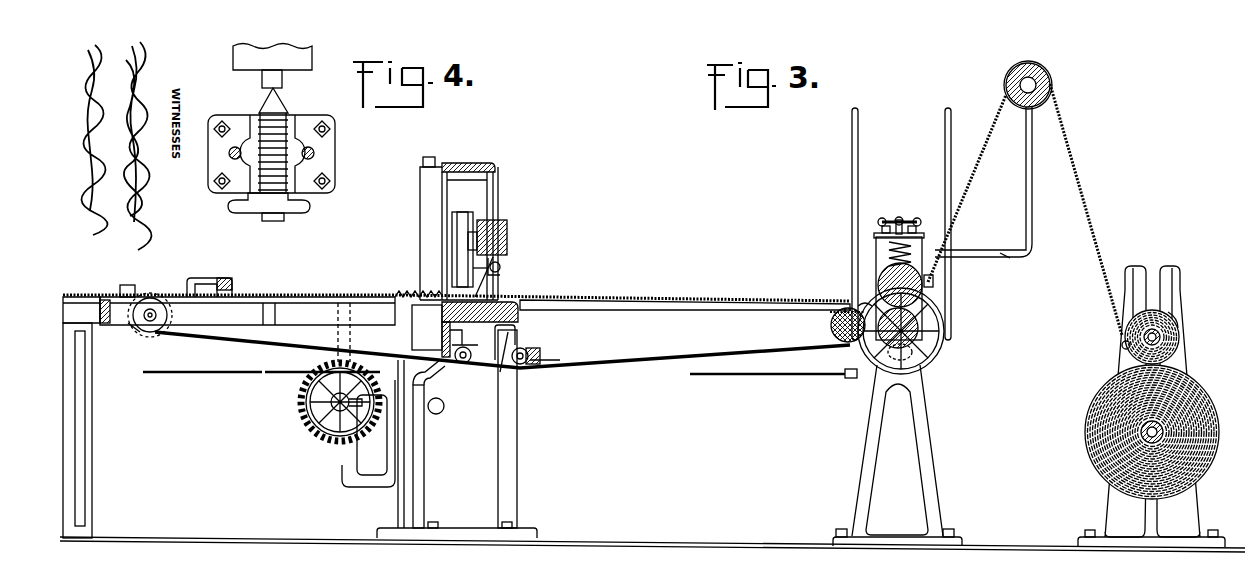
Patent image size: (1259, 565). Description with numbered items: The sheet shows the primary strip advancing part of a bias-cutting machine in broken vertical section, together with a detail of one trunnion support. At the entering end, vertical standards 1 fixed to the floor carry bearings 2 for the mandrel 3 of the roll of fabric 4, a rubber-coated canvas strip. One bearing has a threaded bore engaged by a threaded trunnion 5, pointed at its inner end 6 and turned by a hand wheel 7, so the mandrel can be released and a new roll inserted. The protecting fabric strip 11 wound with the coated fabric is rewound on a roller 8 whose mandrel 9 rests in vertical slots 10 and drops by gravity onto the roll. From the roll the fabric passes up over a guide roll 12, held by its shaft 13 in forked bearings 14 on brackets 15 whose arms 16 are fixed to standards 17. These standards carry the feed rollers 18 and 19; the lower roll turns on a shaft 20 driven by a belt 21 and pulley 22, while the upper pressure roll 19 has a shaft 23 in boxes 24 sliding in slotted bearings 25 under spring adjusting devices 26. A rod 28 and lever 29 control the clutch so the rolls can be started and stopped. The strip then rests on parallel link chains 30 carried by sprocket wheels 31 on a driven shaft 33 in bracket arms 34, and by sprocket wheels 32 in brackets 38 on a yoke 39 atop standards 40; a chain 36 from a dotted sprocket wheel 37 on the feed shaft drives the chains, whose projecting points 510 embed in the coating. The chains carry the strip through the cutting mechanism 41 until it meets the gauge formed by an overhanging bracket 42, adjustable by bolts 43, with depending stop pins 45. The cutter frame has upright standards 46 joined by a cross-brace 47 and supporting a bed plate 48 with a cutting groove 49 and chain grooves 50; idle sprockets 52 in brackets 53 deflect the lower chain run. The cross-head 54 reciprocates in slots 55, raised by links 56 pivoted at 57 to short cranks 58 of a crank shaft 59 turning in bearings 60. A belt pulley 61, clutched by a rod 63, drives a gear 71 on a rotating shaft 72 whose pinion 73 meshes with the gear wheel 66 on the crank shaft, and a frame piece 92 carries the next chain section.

In FIG. 3, the vertical standards 1 is at (1105, 500).
In FIG. 4, the bearings 2 is at (300, 115).
In FIG. 4, the mandrel 3 is at (262, 74).
In FIG. 3, the mandrel 3 is at (1085, 432).
In FIG. 3, the roll of fabric 4 is at (1212, 385).
In FIG. 4, the threaded trunnion 5 is at (258, 175).
In FIG. 4, the pointed inner end 6 is at (283, 100).
In FIG. 4, the hand wheel 7 is at (290, 208).
In FIG. 3, the roller 8 is at (1178, 335).
In FIG. 3, the mandrel 9 is at (1124, 346).
In FIG. 3, the vertical slots 10 is at (1150, 262).
In FIG. 3, the protecting fabric strip 11 is at (1172, 318).
In FIG. 3, the guide roll 12 is at (997, 110).
In FIG. 3, the shaft 13 is at (1050, 95).
In FIG. 3, the forked bearings 14 is at (1050, 80).
In FIG. 3, the brackets 15 is at (1033, 190).
In FIG. 3, the arms 16 is at (1005, 258).
In FIG. 3, the vertical standards 17 is at (925, 437).
In FIG. 3, the feed roller 18 is at (918, 328).
In FIG. 3, the upper feed roll 19 is at (933, 282).
In FIG. 3, the shaft 20 is at (940, 350).
In FIG. 3, the belt 21 is at (852, 180).
In FIG. 3, the pulley 22 is at (942, 340).
In FIG. 3, the shaft 23 is at (880, 283).
In FIG. 3, the boxes 24 is at (876, 275).
In FIG. 3, the slotted bearings 25 is at (889, 250).
In FIG. 3, the spring adjusting devices 26 is at (915, 232).
In FIG. 3, the rod 28 is at (725, 374).
In FIG. 3, the lever 29 is at (846, 372).
In FIG. 3, the link chains 30 is at (670, 310).
In FIG. 3, the sprocket wheels 31 is at (831, 325).
In FIG. 3, the sprocket wheels 32 is at (152, 325).
In FIG. 3, the driven shaft 33 is at (843, 312).
In FIG. 3, the bracket arms 34 is at (897, 399).
In FIG. 3, the chain 36 is at (860, 308).
In FIG. 3, the sprocket wheel 37 is at (899, 358).
In FIG. 3, the brackets 38 is at (138, 318).
In FIG. 3, the yoke 39 is at (88, 288).
In FIG. 3, the standards 40 is at (92, 428).
In FIG. 3, the cutting mechanism 41 is at (412, 219).
In FIG. 3, the overhanging bracket 42 is at (205, 278).
In FIG. 3, the bolts 43 is at (128, 285).
In FIG. 3, the stop pins 45 is at (232, 292).
In FIG. 3, the upright standards 46 is at (498, 200).
In FIG. 3, the cross-brace 47 is at (470, 165).
In FIG. 3, the bed plate 48 is at (510, 302).
In FIG. 3, the groove 49 is at (486, 285).
In FIG. 3, the grooves 50 is at (427, 327).
In FIG. 3, the idle sprockets 52 is at (530, 384).
In FIG. 3, the brackets 53 is at (548, 380).
In FIG. 3, the cross-head 54 is at (507, 226).
In FIG. 3, the slots 55 is at (460, 216).
In FIG. 3, the links 56 is at (473, 268).
In FIG. 3, the pivotal connection 57 is at (500, 262).
In FIG. 3, the short cranks 58 is at (515, 332).
In FIG. 3, the crank shaft 59 is at (503, 360).
In FIG. 3, the bearings 60 is at (450, 343).
In FIG. 3, the belt pulley 61 is at (330, 342).
In FIG. 3, the rod 63 is at (225, 373).
In FIG. 3, the gear wheel 66 is at (400, 295).
In FIG. 3, the gear 71 is at (300, 408).
In FIG. 3, the rotating shaft 72 is at (368, 440).
In FIG. 3, the pinion 73 is at (398, 398).
In FIG. 3, the frame piece 92 is at (247, 311).
In FIG. 3, the projecting points 510 is at (660, 372).